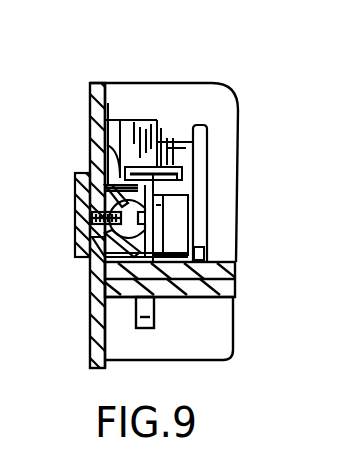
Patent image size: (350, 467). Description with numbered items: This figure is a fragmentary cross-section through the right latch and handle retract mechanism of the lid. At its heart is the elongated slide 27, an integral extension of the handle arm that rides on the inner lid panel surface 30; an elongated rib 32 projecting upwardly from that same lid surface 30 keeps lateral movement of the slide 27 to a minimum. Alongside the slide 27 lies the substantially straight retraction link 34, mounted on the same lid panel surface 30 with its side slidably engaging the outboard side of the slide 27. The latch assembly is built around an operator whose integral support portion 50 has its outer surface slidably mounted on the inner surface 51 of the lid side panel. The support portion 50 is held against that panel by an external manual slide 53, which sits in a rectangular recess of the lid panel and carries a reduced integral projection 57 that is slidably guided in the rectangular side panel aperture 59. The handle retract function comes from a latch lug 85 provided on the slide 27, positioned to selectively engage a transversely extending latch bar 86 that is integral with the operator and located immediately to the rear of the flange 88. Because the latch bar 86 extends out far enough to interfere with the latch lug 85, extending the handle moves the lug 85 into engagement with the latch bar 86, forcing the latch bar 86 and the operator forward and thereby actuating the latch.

The slide 27 is at (183, 219).
The inner lid panel surface 30 is at (218, 262).
The rib 32 is at (207, 248).
The retraction link 34 is at (185, 194).
The support portion 50 is at (110, 147).
The inner surface 51 is at (108, 103).
The external manual slide 53 is at (78, 203).
The projection 57 is at (108, 150).
The side panel aperture 59 is at (78, 236).
The latch lug 85 is at (182, 143).
The latch bar 86 is at (183, 147).
The flange 88 is at (135, 127).